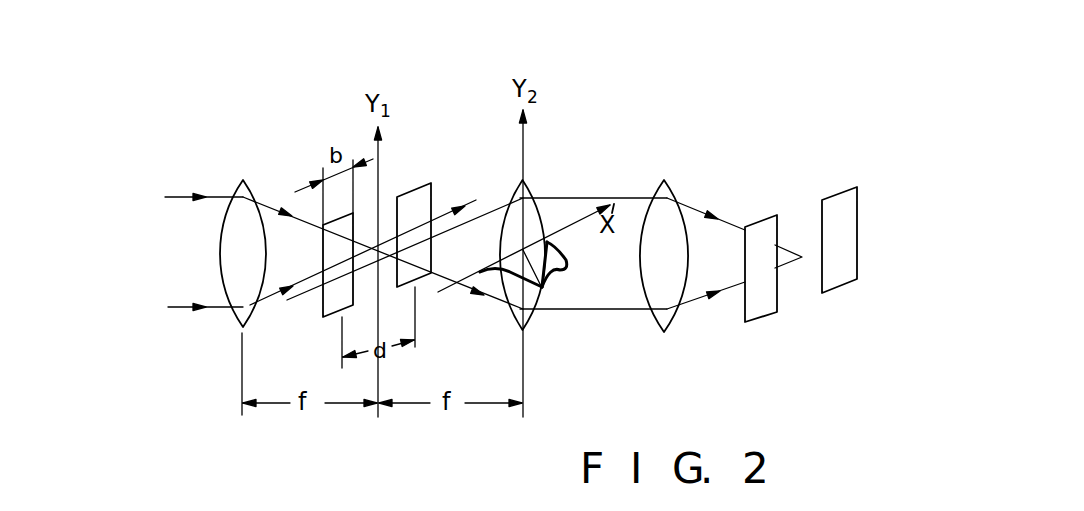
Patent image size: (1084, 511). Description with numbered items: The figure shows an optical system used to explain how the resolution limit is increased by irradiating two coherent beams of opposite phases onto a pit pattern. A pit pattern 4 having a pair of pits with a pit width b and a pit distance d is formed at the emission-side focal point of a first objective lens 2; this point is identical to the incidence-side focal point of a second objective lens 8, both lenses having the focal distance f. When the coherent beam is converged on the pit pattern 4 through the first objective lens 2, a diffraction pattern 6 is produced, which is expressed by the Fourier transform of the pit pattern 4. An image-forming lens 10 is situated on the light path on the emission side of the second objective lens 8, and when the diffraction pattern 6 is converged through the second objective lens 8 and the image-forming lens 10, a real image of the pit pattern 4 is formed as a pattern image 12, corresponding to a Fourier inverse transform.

The first objective lens 2 is at (255, 197).
The pit pattern 4 is at (397, 184).
The diffraction pattern 6 is at (558, 283).
The second objective lens 8 is at (532, 181).
The image-forming lens 10 is at (674, 196).
The pattern image 12 is at (772, 203).